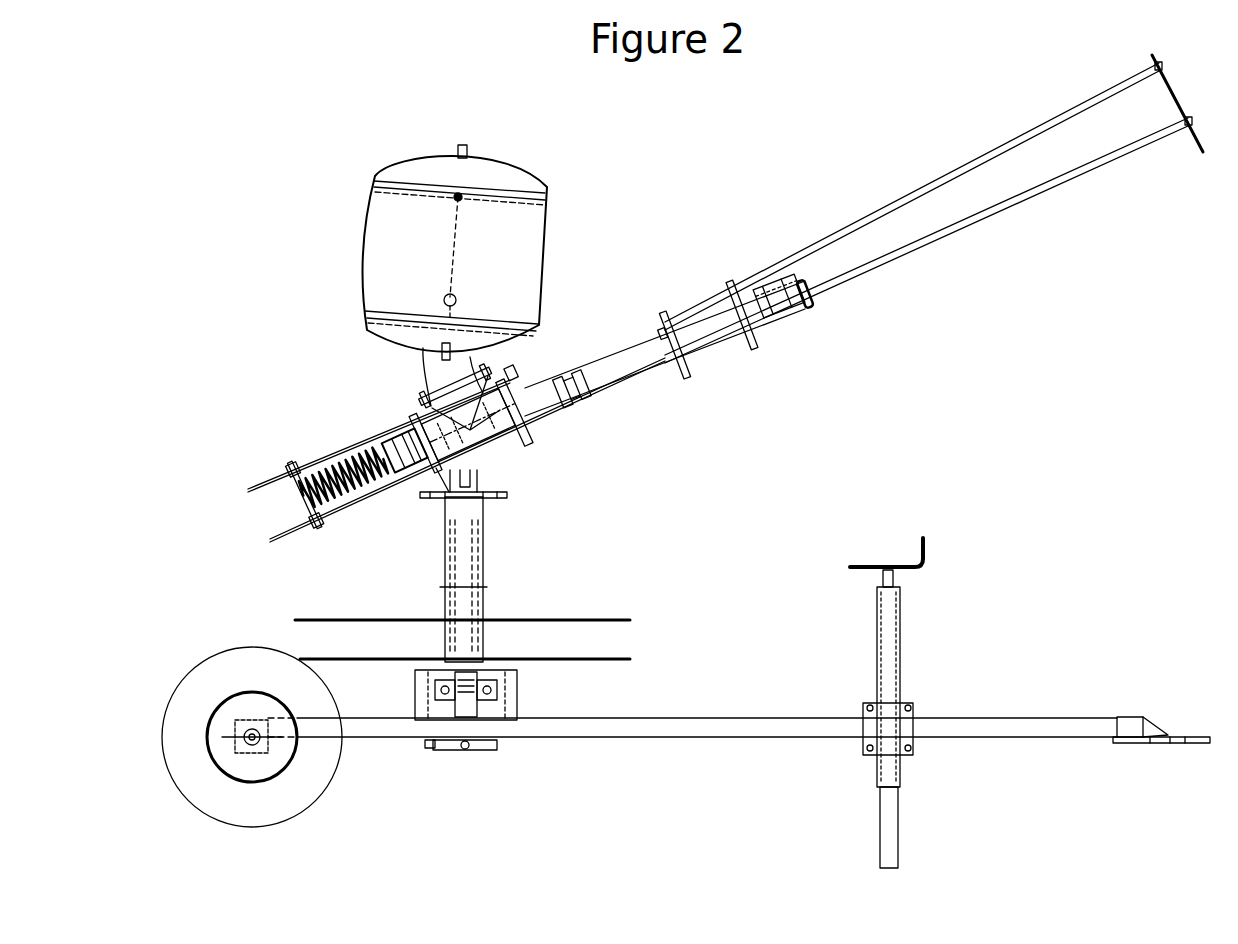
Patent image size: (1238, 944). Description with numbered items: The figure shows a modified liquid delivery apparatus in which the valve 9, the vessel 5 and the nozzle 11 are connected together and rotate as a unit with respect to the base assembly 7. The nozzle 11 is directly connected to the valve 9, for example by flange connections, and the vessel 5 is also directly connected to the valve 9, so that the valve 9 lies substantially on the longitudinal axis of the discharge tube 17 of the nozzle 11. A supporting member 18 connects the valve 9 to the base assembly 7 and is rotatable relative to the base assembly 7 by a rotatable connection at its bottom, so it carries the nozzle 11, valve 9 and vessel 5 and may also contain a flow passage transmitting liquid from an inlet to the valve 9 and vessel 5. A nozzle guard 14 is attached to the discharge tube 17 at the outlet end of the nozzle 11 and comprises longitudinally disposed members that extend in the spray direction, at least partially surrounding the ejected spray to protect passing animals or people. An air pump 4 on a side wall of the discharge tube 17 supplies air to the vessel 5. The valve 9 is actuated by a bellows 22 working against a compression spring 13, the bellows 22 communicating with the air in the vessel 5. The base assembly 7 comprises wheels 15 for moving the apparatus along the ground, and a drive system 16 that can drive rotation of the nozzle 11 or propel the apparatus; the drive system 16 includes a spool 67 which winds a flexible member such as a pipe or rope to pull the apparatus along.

The vessel 5 is at (395, 273).
The air pump 4 is at (533, 378).
The nozzle guard 14 is at (1060, 190).
The discharge tube 17 is at (832, 300).
The nozzle 11 is at (612, 395).
The valve 9 is at (530, 427).
The compression spring 13 is at (322, 452).
The bellows 22 is at (400, 440).
The supporting member 18 is at (487, 555).
The drive system 16 is at (520, 618).
The spool 67 is at (540, 645).
The wheels 15 is at (205, 770).
The base assembly 7 is at (597, 730).